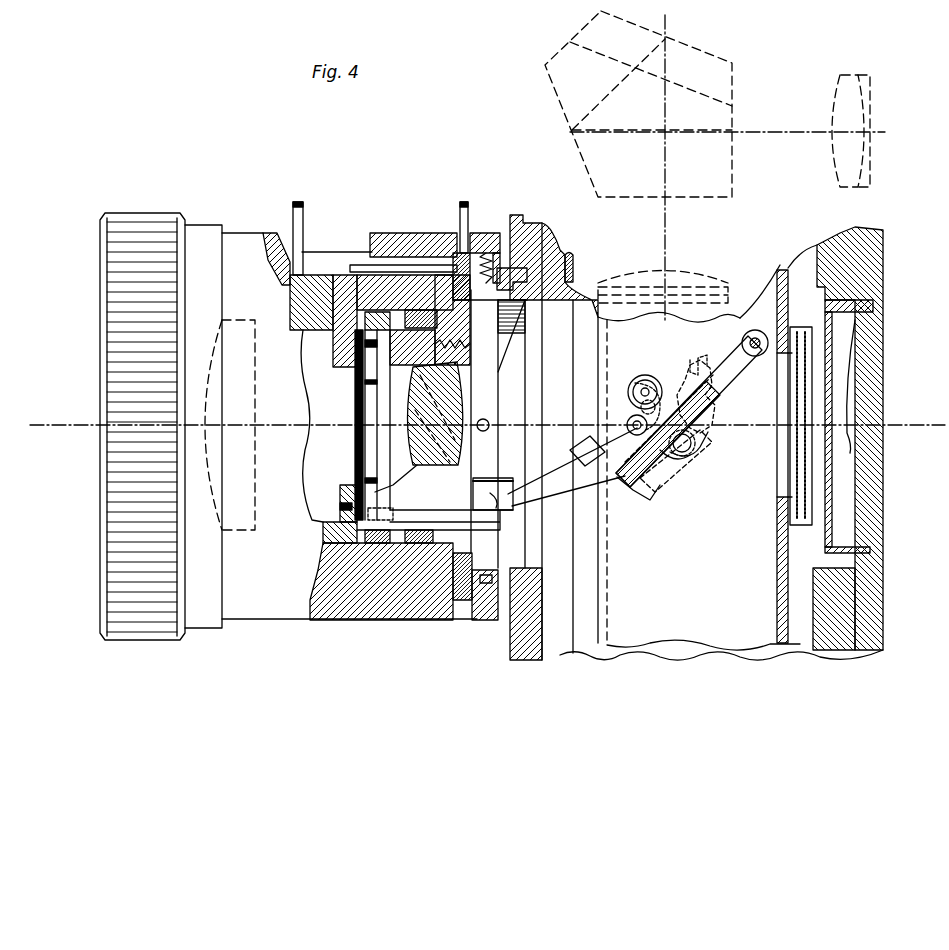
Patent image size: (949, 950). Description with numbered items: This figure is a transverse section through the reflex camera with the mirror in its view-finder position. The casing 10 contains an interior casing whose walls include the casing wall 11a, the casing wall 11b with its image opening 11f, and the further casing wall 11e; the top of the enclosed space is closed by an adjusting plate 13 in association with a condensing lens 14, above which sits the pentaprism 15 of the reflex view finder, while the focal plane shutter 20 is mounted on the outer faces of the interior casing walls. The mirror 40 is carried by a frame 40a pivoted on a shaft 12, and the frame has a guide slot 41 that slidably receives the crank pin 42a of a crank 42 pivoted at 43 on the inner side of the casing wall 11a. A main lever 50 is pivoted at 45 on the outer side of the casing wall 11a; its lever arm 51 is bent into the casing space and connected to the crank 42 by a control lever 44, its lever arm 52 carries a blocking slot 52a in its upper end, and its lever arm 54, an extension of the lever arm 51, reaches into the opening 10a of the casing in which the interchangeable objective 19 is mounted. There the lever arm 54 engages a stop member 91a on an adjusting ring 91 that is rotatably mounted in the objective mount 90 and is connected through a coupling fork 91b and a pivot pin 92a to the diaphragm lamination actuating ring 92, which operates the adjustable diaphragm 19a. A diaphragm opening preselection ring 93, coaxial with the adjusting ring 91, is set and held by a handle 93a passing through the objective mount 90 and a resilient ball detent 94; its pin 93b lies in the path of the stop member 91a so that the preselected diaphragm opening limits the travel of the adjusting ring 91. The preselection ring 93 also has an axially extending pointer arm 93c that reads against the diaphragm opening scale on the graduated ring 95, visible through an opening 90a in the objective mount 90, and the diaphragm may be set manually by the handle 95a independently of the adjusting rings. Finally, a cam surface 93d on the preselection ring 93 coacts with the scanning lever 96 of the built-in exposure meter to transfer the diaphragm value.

The casing 10 is at (853, 605).
The opening 10a is at (533, 380).
The casing wall 11a is at (636, 330).
The casing wall 11b is at (782, 604).
The casing wall 11e is at (607, 612).
The image opening 11f is at (778, 470).
The shaft 12 is at (755, 338).
The adjusting plate 13 is at (728, 298).
The condensing lens 14 is at (700, 278).
The pentaprism 15 is at (572, 95).
The interchangeable objective 19 is at (425, 393).
The adjustable diaphragm 19a is at (355, 452).
The focal plane shutter 20 is at (800, 405).
The mirror 40 is at (643, 462).
The frame 40a is at (655, 455).
The guide slot 41 is at (700, 392).
The crank 42 is at (657, 405).
The crank pin 42a is at (697, 443).
The pivot 43 is at (645, 388).
The control lever 44 is at (633, 422).
The pivot 45 is at (698, 455).
The main lever 50 is at (673, 457).
The lever arm 51 is at (587, 440).
The lever arm 52 is at (706, 380).
The blocking slot 52a is at (693, 362).
The lever arm 54 is at (508, 497).
The objective mount 90 is at (335, 604).
The opening 90a is at (315, 255).
The adjusting ring 91 is at (420, 313).
The stop member 91a is at (500, 504).
The coupling fork 91b is at (338, 548).
The diaphragm lamination actuating ring 92 is at (375, 313).
The pivot pin 92a is at (380, 522).
The diaphragm opening preselection ring 93 is at (496, 560).
The handle 93a is at (464, 202).
The pin 93b is at (489, 422).
The pointer arm 93c is at (407, 268).
The cam surface 93d is at (512, 345).
The resilient ball detent 94 is at (485, 283).
The graduated ring 95 is at (333, 290).
The handle 95a is at (298, 202).
The scanning lever 96 is at (574, 262).